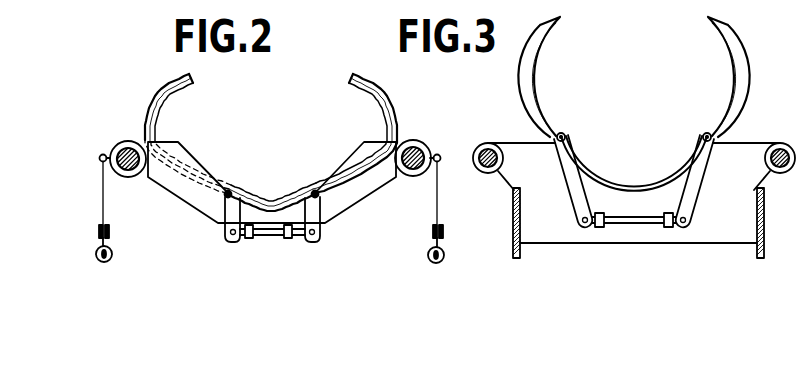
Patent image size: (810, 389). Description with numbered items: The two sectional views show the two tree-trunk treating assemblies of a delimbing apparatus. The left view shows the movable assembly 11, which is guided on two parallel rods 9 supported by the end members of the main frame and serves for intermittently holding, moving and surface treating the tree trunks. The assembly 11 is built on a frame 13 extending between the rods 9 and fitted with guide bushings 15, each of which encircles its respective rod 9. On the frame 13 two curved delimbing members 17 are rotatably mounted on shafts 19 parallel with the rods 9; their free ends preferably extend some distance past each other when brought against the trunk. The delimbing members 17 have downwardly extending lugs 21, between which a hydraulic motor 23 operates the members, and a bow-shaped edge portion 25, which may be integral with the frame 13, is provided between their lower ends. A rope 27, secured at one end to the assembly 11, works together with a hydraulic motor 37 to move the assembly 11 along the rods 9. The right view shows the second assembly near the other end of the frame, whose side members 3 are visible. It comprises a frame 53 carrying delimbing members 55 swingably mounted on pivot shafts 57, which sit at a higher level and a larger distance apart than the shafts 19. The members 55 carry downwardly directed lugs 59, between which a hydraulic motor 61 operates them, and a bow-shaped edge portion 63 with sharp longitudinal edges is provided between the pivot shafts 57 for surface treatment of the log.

In FIG. 3, the side member 3 is at (512, 222).
In FIG. 2, the rod 9 is at (131, 146).
In FIG. 3, the rod 9 is at (489, 143).
In FIG. 2, the assembly 11 is at (208, 221).
In FIG. 2, the frame 13 is at (368, 188).
In FIG. 2, the guide bushing 15 is at (117, 147).
In FIG. 2, the delimbing member 17 is at (177, 103).
In FIG. 2, the shaft 19 is at (228, 190).
In FIG. 2, the lug 21 is at (224, 234).
In FIG. 2, the hydraulic motor 23 is at (272, 238).
In FIG. 2, the bow-shaped edge portion 25 is at (271, 208).
In FIG. 2, the rope 27 is at (103, 203).
In FIG. 2, the hydraulic motor 37 is at (112, 258).
In FIG. 3, the frame 53 is at (738, 245).
In FIG. 3, the delimbing member 55 is at (545, 50).
In FIG. 3, the pivot shaft 57 is at (564, 134).
In FIG. 3, the lug 59 is at (575, 200).
In FIG. 3, the hydraulic motor 61 is at (639, 227).
In FIG. 3, the bow-shaped edge portion 63 is at (633, 196).